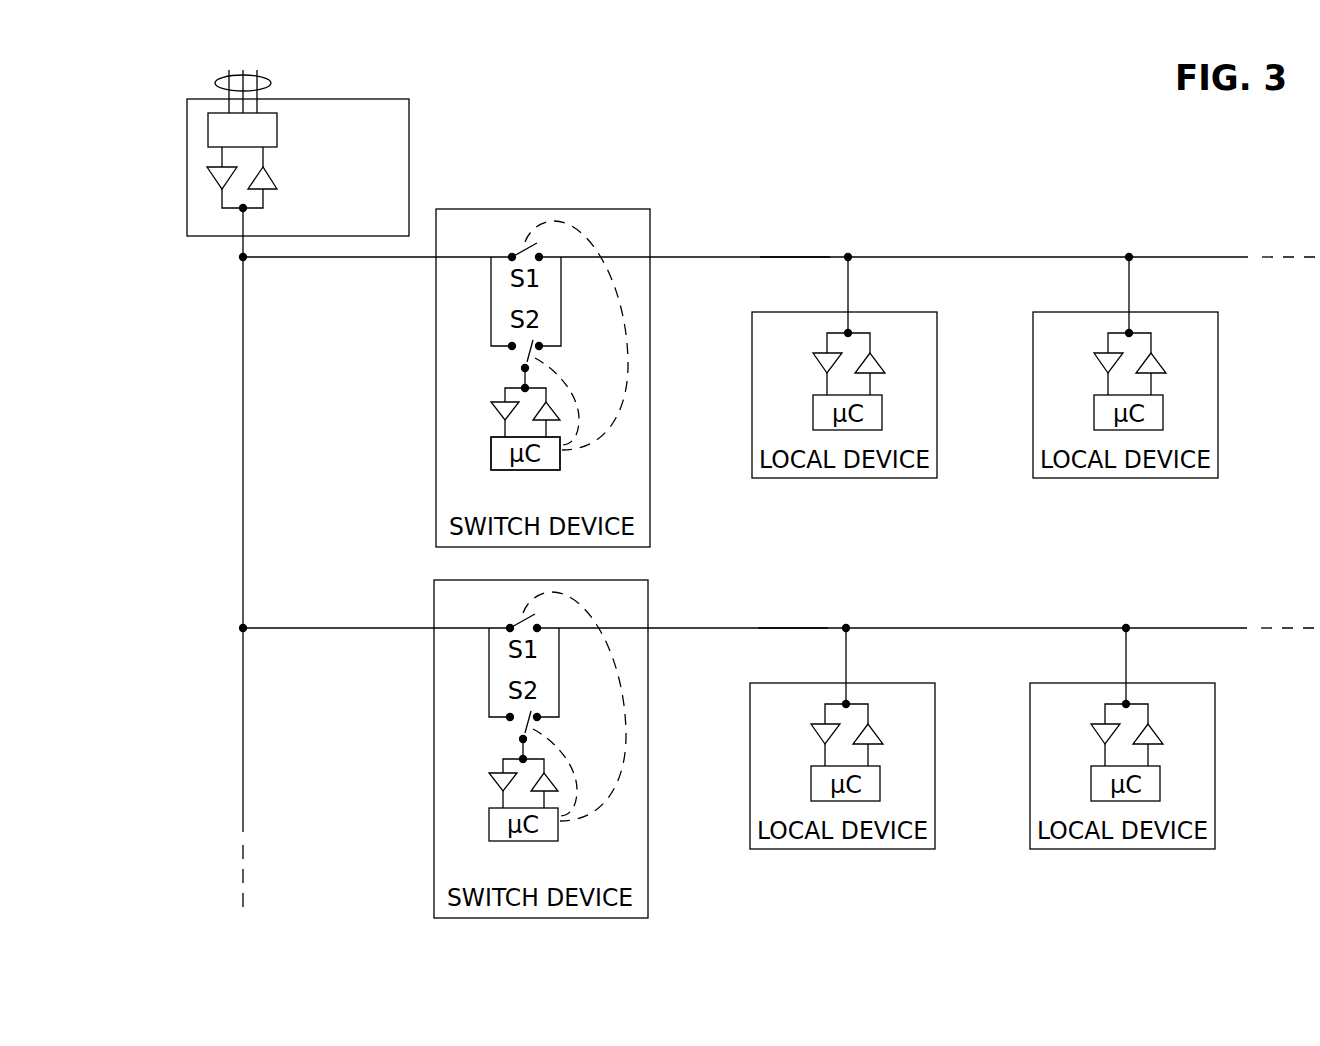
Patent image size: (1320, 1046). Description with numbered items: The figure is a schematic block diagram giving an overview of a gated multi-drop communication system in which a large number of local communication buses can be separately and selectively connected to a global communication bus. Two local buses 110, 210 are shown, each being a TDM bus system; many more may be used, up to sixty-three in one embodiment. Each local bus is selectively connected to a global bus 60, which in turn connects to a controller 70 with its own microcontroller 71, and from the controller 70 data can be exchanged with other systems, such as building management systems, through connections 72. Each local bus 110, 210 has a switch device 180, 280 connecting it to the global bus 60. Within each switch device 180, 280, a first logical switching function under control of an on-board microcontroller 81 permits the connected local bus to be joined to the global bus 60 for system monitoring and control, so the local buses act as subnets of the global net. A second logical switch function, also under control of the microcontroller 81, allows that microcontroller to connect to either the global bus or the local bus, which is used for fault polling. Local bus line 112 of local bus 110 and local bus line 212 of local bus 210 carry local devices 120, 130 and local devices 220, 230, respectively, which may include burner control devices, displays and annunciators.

The global bus 60 is at (242, 367).
The controller 70 is at (409, 133).
The controller microcontroller 71 is at (277, 133).
The connections 72 is at (271, 83).
The microcontroller 81 is at (552, 463).
The local bus 110 is at (1086, 218).
The local bus line 112 is at (787, 257).
The local device 120 is at (813, 366).
The local device 130 is at (1094, 366).
The switch device 180 is at (577, 377).
The local bus 210 is at (1085, 591).
The local bus line 212 is at (785, 628).
The local device 220 is at (811, 737).
The local device 230 is at (1091, 737).
The switch device 280 is at (575, 748).